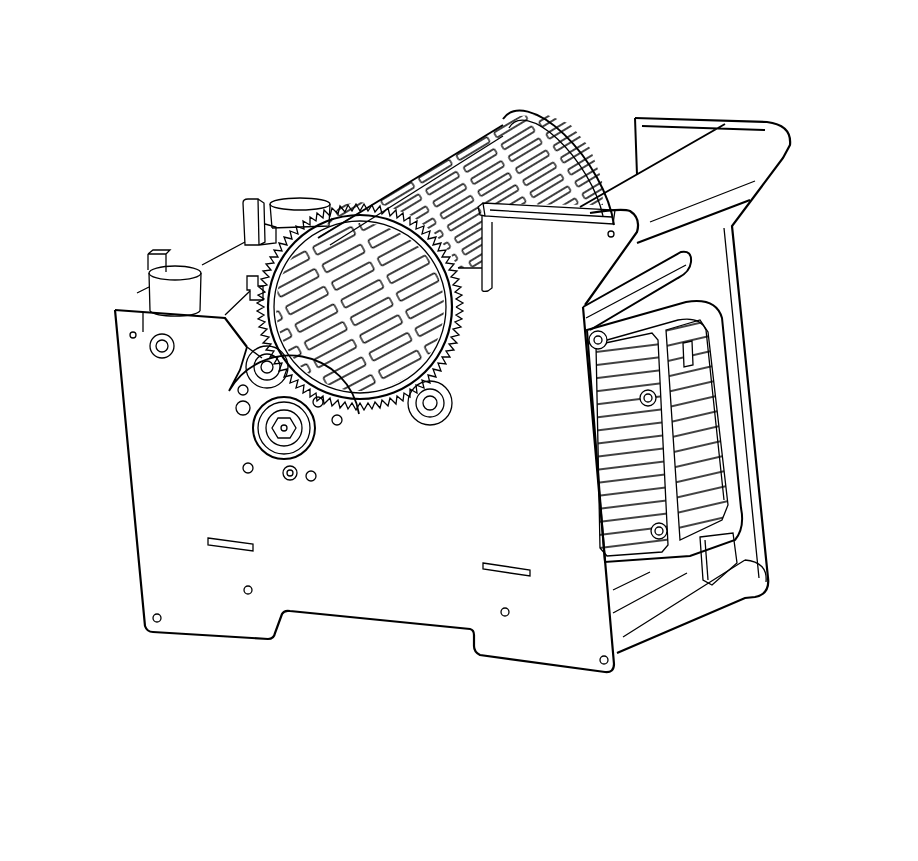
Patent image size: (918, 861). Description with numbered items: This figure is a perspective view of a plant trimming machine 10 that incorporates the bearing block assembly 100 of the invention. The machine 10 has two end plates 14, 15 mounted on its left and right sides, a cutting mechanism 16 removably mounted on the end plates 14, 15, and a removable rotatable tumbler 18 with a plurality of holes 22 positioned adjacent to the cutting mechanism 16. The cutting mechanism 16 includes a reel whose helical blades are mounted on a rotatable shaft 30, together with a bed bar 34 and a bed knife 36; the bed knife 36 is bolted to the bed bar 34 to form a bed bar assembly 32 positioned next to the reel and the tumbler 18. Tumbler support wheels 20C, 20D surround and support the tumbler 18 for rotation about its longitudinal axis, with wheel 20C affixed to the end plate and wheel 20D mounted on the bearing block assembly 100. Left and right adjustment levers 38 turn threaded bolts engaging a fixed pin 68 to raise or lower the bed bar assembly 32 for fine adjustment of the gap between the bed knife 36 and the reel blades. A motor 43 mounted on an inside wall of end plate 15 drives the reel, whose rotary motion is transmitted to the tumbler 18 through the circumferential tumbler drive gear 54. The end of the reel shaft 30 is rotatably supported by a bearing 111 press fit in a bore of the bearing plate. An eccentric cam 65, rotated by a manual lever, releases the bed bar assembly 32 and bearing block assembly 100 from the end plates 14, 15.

The plant trimming machine 10 is at (407, 33).
The end plate 14 is at (410, 597).
The end plate 15 is at (677, 135).
The cutting mechanism 16 is at (262, 250).
The tumbler 18 is at (548, 122).
The holes 22 is at (482, 130).
The tumbler support wheel 20C is at (447, 400).
The tumbler support wheel 20D is at (262, 366).
The rotatable shaft 30 is at (282, 432).
The bed bar assembly 32 is at (183, 195).
The bed bar 34 is at (223, 247).
The bed knife 36 is at (255, 296).
The adjustment lever 38 is at (160, 291).
The motor 43 is at (690, 367).
The tumbler drive gear 54 is at (488, 250).
The eccentric cam 65 is at (170, 356).
The fixed pin 68 is at (152, 346).
The bearing block assembly 100 is at (242, 487).
The bearing 111 is at (305, 432).